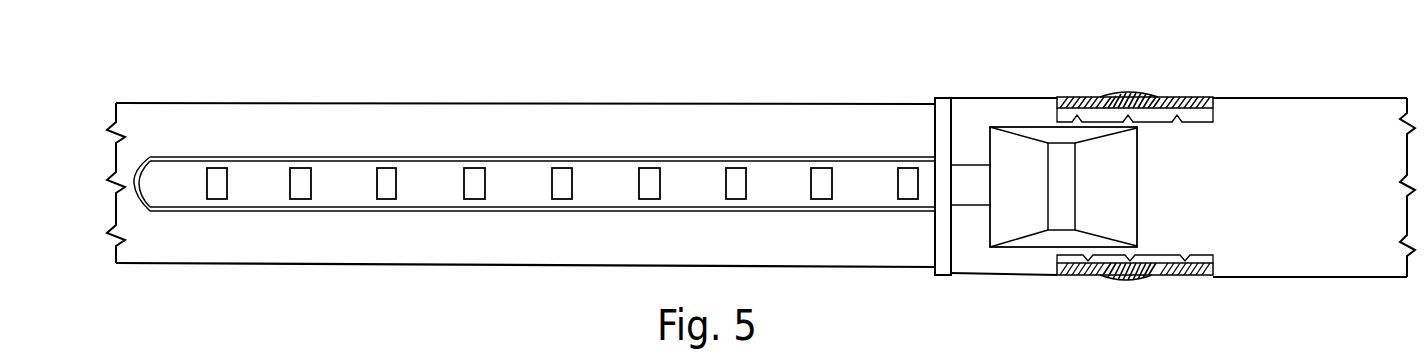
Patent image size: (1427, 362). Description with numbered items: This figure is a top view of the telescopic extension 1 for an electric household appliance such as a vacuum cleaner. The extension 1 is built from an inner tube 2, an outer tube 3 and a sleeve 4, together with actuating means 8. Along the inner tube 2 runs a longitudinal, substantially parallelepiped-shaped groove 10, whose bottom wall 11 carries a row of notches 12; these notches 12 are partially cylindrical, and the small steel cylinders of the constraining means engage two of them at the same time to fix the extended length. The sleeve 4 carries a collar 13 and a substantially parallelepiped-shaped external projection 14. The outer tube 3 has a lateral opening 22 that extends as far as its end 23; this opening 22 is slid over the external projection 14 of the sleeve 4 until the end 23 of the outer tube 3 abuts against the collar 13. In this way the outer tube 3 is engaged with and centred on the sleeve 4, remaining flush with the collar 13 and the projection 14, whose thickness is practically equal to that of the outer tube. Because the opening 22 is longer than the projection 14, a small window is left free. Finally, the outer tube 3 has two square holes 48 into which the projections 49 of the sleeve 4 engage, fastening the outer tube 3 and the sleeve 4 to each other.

The telescopic extension 1 is at (974, 85).
The inner tube 2 is at (677, 98).
The outer tube 3 is at (1297, 92).
The sleeve 4 is at (928, 136).
The actuating means 8 is at (1112, 183).
The groove 10 is at (498, 158).
The bottom wall 11 is at (695, 195).
The notches 12 is at (384, 178).
The collar 13 is at (942, 232).
The external projection 14 is at (971, 197).
The lateral opening 22 is at (968, 208).
The end 23 is at (951, 249).
The square holes 48 is at (1157, 97).
The projections 49 is at (1123, 96).